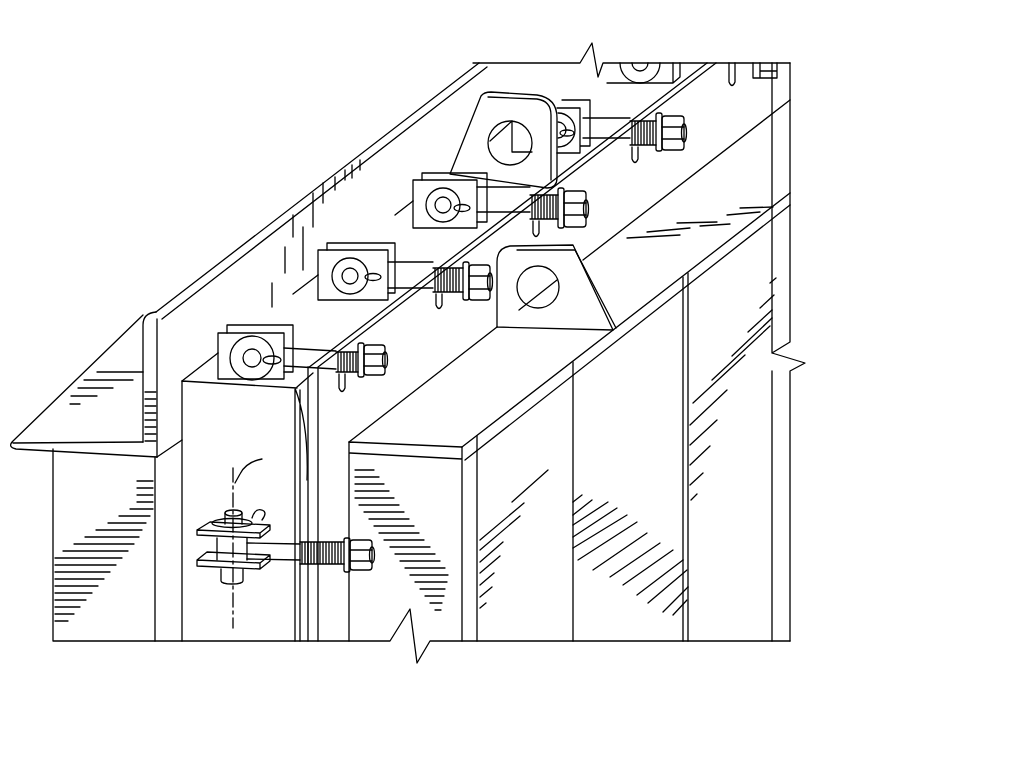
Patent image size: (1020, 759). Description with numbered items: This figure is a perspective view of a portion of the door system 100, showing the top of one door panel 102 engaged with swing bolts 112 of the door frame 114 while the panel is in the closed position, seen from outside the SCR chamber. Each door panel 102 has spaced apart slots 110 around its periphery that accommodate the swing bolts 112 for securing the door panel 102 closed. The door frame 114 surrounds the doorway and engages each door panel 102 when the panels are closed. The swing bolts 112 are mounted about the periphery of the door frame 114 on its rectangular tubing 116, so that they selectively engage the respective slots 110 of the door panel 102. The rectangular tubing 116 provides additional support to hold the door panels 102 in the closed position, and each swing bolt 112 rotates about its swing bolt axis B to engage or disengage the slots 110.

The door system 100 is at (128, 158).
The door panel 102 is at (341, 607).
The slots 110 is at (440, 303).
The swing bolts 112 is at (388, 356).
The door frame 114 is at (194, 610).
The rectangular tubing 116 is at (214, 404).